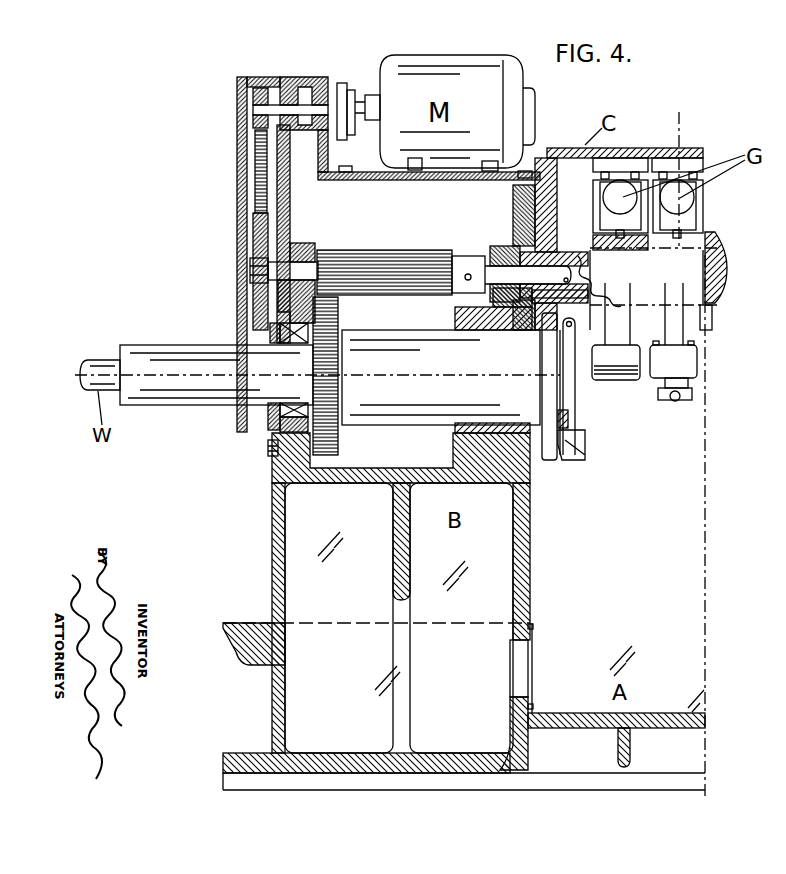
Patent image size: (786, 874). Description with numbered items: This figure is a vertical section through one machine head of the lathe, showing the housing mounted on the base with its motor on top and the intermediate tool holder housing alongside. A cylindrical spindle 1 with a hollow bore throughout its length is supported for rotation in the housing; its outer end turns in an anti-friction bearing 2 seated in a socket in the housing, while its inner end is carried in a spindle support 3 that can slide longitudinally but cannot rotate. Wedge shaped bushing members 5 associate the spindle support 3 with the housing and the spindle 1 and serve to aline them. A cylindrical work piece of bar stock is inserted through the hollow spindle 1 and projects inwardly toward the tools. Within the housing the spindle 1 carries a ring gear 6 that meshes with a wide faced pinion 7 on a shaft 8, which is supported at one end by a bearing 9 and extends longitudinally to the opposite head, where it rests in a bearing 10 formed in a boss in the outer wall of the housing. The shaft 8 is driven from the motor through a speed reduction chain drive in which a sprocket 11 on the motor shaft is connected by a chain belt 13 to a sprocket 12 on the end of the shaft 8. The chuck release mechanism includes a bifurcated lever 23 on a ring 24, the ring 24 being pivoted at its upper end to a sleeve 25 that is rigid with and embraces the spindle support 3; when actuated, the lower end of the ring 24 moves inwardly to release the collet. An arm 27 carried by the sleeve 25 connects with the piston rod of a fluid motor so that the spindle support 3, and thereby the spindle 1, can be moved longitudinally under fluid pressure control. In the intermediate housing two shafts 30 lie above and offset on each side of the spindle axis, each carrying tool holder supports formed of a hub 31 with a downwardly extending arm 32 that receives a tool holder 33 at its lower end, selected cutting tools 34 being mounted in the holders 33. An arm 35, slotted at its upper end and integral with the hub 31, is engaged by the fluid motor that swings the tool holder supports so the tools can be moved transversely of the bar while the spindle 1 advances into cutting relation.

The cylindrical spindle 1 is at (164, 406).
The anti-friction bearing 2 is at (262, 428).
The spindle support 3 is at (393, 424).
The wedge shaped bushing members 5 is at (343, 338).
The ring gear 6 is at (339, 450).
The wide faced pinion 7 is at (362, 250).
The shaft 8 is at (497, 273).
The bearing 9 is at (313, 243).
The bearing 10 is at (508, 248).
The sprocket 11 is at (255, 97).
The sprocket 12 is at (253, 253).
The chain belt 13 is at (258, 168).
The bifurcated lever 23 is at (568, 444).
The ring 24 is at (582, 415).
The sleeve 25 is at (548, 362).
The arm 27 is at (571, 421).
The shafts 30 is at (727, 293).
The hub 31 is at (712, 318).
The downwardly extending arm 32 is at (692, 358).
The tool holder 33 is at (700, 378).
The cutting tools 34 is at (692, 391).
The arm 35 is at (606, 232).